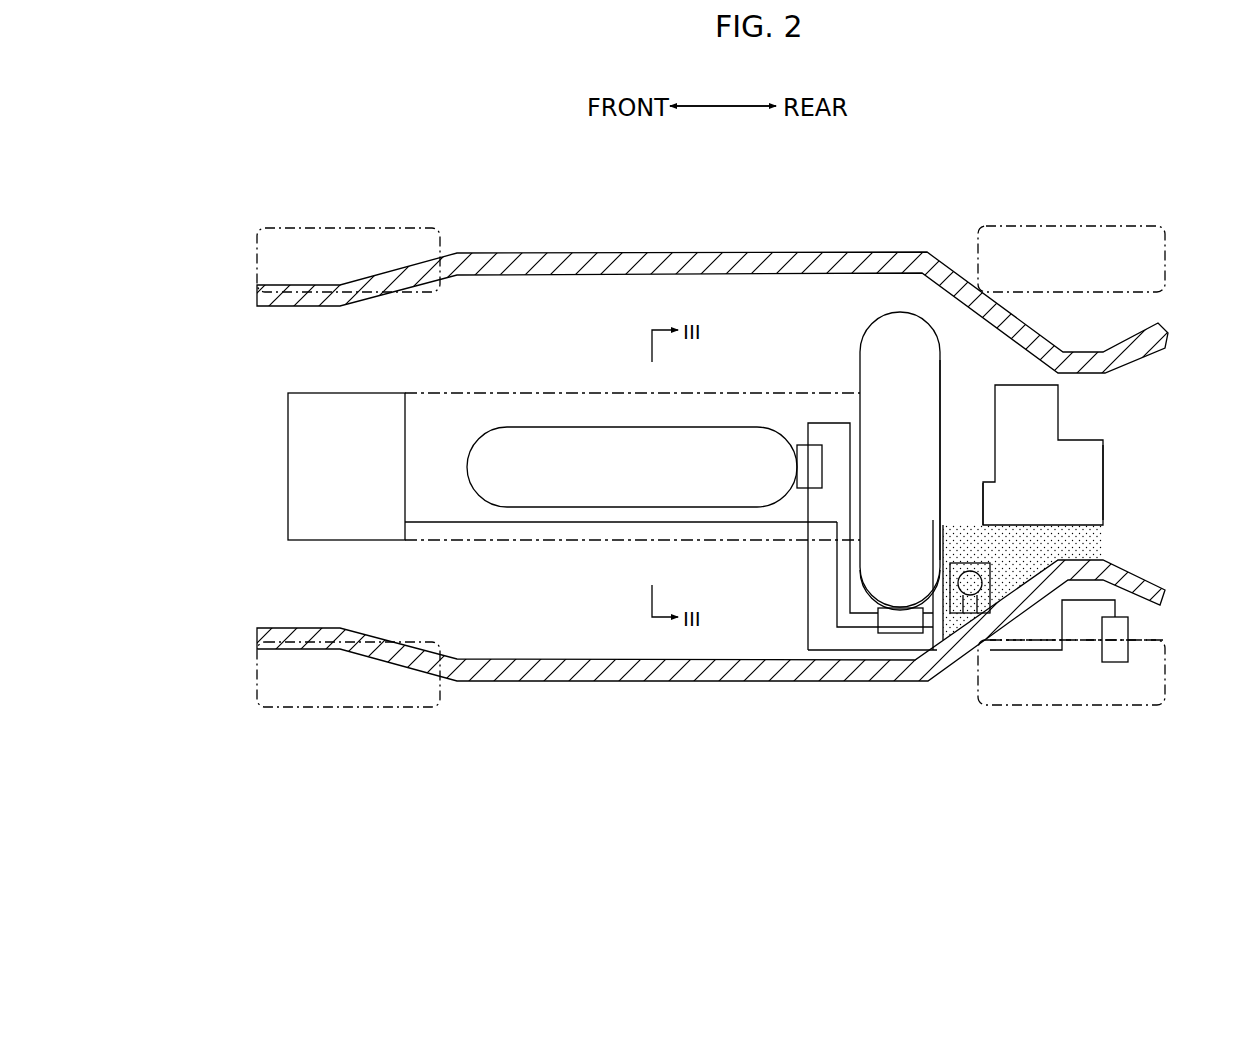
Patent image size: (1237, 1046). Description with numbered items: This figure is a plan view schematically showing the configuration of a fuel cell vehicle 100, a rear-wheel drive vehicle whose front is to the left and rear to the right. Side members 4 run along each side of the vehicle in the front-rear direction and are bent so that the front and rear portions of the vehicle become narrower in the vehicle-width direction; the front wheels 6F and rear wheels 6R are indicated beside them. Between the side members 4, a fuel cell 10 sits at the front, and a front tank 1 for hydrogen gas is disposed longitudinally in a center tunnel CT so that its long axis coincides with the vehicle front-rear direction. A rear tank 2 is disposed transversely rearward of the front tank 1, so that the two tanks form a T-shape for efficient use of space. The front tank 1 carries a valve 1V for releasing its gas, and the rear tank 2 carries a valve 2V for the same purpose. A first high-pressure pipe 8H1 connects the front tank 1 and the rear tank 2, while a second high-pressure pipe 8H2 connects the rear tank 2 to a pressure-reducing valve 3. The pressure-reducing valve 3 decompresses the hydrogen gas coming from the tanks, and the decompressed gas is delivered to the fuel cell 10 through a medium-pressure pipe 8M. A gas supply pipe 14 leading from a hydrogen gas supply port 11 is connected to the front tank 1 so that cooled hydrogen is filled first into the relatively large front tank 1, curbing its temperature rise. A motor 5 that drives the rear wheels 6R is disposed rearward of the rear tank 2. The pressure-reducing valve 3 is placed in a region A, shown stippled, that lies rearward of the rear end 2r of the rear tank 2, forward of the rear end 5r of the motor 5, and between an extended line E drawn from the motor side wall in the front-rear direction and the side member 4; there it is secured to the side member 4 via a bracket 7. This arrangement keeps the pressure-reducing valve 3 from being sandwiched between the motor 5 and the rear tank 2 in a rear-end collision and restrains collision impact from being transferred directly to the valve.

The fuel cell vehicle 100 is at (273, 157).
The side members 4 is at (622, 252).
The front wheels 6F is at (365, 228).
The rear wheels 6R is at (1098, 240).
The fuel cell 10 is at (400, 393).
The center tunnel CT is at (487, 530).
The medium-pressure pipe 8M is at (563, 525).
The front tank 1 is at (610, 437).
The valve 1V is at (800, 445).
The first high-pressure pipe 8H1 is at (850, 483).
The rear tank 2 is at (900, 312).
The rear end of the rear tank 2r is at (942, 376).
The second high-pressure pipe 8H2 is at (932, 597).
The valve 2V is at (897, 637).
The extended line E is at (952, 522).
The region A is at (1060, 540).
The motor 5 is at (1060, 460).
The rear end of the motor 5r is at (1107, 475).
The pressure-reducing valve 3 is at (984, 524).
The bracket 7 is at (955, 620).
The gas supply pipe 14 is at (1078, 605).
The hydrogen gas supply port 11 is at (1112, 664).